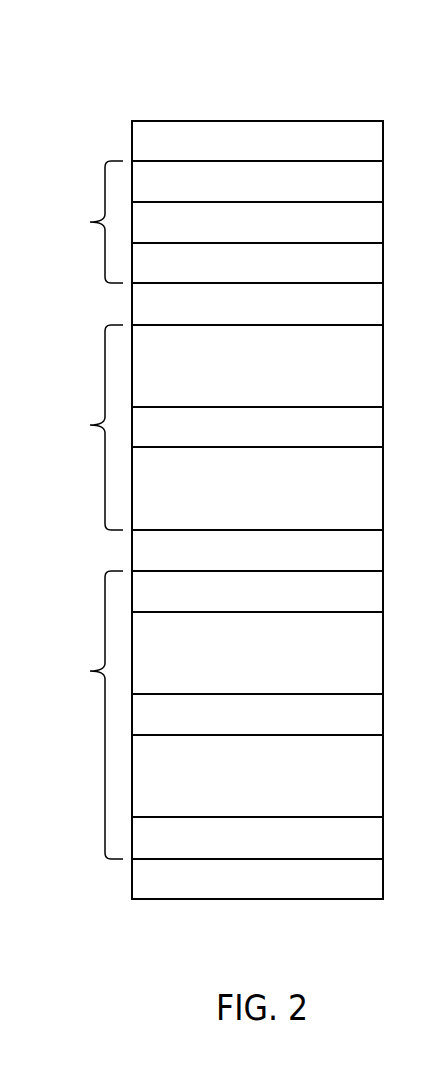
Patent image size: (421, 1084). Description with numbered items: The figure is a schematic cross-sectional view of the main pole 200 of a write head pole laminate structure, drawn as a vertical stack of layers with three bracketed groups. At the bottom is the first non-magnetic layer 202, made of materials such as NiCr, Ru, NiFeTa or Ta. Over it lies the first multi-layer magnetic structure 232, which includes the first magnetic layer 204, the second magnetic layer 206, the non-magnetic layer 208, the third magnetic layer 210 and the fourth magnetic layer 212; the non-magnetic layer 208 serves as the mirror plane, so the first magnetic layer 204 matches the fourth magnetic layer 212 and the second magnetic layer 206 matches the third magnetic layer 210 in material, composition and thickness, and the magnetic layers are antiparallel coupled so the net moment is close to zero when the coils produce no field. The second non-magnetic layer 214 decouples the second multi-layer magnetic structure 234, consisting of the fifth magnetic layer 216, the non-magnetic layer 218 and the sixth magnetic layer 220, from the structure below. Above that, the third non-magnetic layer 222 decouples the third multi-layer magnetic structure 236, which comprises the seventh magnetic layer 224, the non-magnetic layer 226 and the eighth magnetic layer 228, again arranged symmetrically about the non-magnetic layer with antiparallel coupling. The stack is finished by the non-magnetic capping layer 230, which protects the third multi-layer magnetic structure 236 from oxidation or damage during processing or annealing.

The main pole 200 is at (123, 64).
The first non-magnetic layer 202 is at (278, 889).
The first magnetic layer 204 is at (278, 848).
The second magnetic layer 206 is at (278, 786).
The non-magnetic layer 208 is at (278, 724).
The third magnetic layer 210 is at (278, 663).
The fourth magnetic layer 212 is at (278, 601).
The second non-magnetic layer 214 is at (278, 560).
The fifth magnetic layer 216 is at (278, 498).
The non-magnetic layer 218 is at (278, 437).
The sixth magnetic layer 220 is at (278, 376).
The third non-magnetic layer 222 is at (278, 314).
The seventh magnetic layer 224 is at (278, 273).
The non-magnetic layer 226 is at (278, 233).
The eighth magnetic layer 228 is at (278, 192).
The non-magnetic capping layer 230 is at (278, 151).
The first multi-layer magnetic structure 232 is at (84, 715).
The second multi-layer magnetic structure 234 is at (84, 427).
The third multi-layer magnetic structure 236 is at (84, 222).